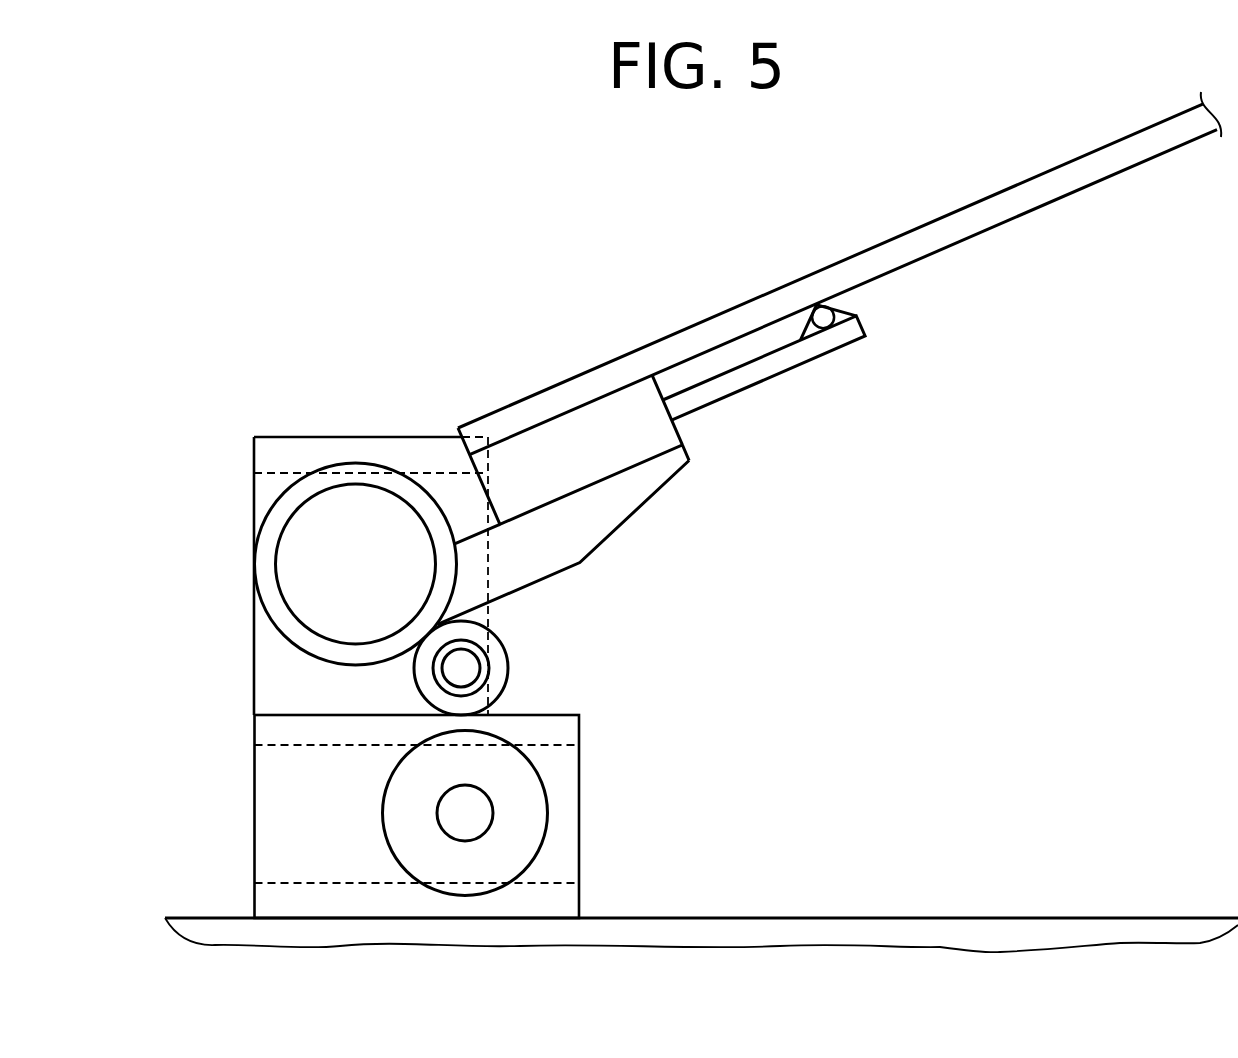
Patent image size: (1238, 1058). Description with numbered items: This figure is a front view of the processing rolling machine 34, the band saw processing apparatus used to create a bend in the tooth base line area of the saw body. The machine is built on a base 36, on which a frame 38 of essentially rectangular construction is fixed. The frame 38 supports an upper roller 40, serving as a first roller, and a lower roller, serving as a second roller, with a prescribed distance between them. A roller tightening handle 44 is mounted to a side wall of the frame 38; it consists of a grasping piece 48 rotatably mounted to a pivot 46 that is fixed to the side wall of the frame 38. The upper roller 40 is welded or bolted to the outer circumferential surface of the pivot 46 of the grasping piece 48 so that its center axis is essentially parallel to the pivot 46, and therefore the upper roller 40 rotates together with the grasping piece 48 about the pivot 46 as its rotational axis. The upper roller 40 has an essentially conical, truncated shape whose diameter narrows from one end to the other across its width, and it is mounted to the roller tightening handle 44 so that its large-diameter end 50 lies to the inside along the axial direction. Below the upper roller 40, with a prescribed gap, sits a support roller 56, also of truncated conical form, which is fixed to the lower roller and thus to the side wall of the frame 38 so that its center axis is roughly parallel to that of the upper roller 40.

The processing rolling machine 34 is at (336, 291).
The base 36 is at (958, 937).
The frame 38 is at (272, 679).
The upper roller 40 is at (527, 696).
The roller tightening handle 44 is at (507, 381).
The pivot 46 is at (325, 523).
The grasping piece 48 is at (852, 268).
The large-diameter end 50 is at (498, 642).
The support roller 56 is at (493, 853).